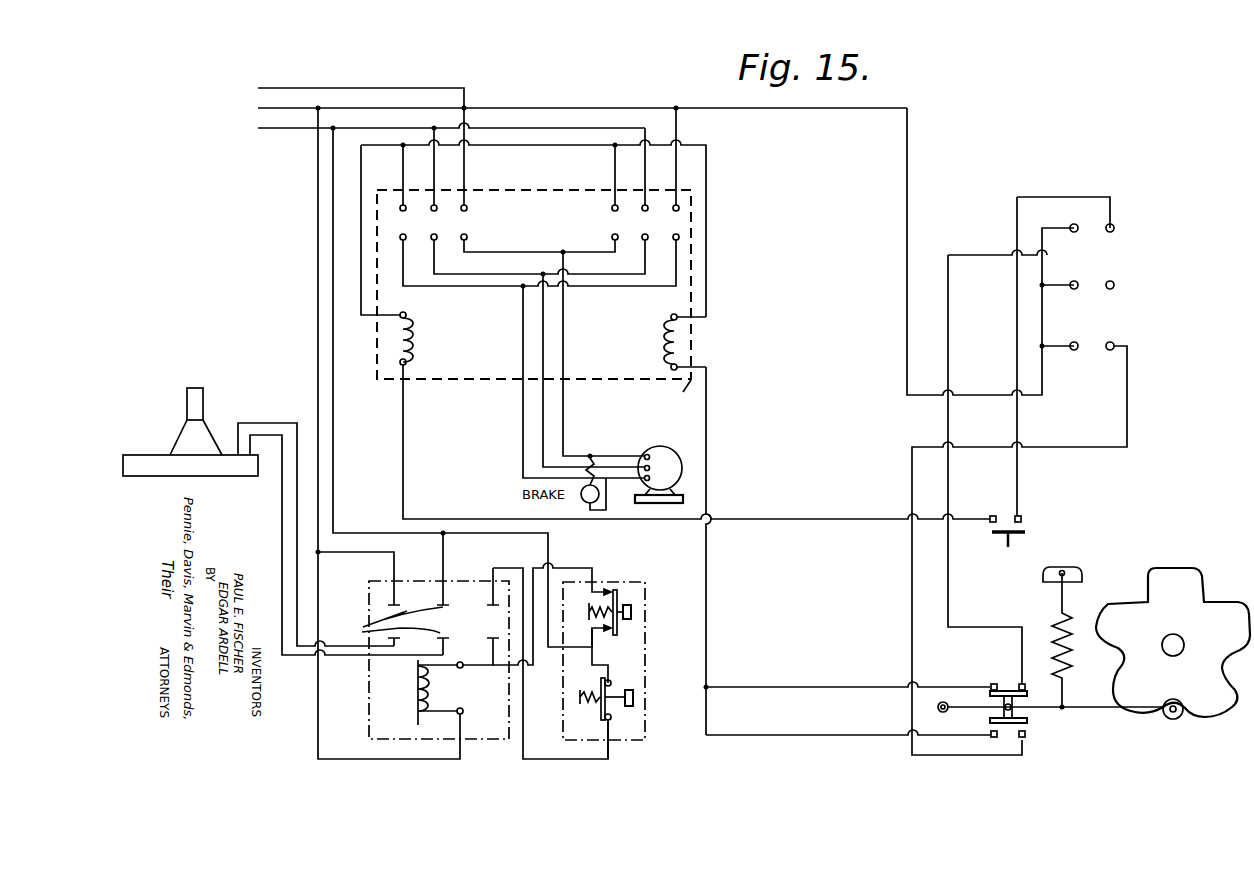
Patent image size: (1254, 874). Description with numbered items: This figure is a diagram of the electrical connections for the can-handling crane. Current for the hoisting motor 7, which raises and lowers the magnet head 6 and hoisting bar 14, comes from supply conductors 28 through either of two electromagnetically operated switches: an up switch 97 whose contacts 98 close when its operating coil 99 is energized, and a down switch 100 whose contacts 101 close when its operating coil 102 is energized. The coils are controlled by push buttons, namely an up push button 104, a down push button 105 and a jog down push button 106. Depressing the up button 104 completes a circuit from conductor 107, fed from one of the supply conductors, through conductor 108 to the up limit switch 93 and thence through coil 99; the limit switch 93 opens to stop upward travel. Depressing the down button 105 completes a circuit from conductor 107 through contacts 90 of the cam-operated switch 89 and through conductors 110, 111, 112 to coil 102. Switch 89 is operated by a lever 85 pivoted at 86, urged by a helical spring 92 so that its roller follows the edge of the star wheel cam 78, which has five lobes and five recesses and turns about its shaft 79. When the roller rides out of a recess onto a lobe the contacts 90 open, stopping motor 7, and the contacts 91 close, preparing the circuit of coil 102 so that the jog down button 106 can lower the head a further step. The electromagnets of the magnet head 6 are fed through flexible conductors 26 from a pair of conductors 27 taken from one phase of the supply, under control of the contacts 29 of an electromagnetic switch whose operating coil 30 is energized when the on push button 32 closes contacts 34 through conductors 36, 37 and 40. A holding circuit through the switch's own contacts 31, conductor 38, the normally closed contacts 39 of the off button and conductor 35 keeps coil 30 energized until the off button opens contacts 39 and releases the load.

The magnet head 6 is at (152, 457).
The hoisting motor 7 is at (678, 480).
The hoisting bar 14 is at (197, 403).
The flexible conductors 26 is at (297, 509).
The conductors 27 is at (333, 183).
The supply conductors 28 is at (285, 128).
The contacts 29 is at (391, 594).
The operating coil 30 is at (413, 688).
The contacts 31 is at (492, 630).
The on push button 32 is at (635, 605).
The contacts 34 is at (605, 585).
The conductor 35 is at (550, 546).
The conductor 36 is at (577, 568).
The conductor 37 is at (370, 553).
The conductor 38 is at (522, 573).
The contacts 39 is at (603, 708).
The conductor 40 is at (599, 658).
The star wheel cam 78 is at (1160, 590).
The cam shaft 79 is at (1162, 645).
The lever 85 is at (1113, 709).
The pivot 86 is at (945, 700).
The switch 89 is at (1036, 712).
The contacts 90 is at (1019, 684).
The contacts 91 is at (997, 742).
The helical spring 92 is at (1055, 625).
The up limit switch 93 is at (1007, 514).
The up switch 97 is at (383, 227).
The contacts 98 is at (436, 212).
The operating coil 99 is at (418, 320).
The down switch 100 is at (700, 221).
The contacts 101 is at (612, 211).
The operating coil 102 is at (680, 356).
The up push button 104 is at (1098, 225).
The down push button 105 is at (1100, 282).
The jog down push button 106 is at (1092, 345).
The conductor 107 is at (909, 173).
The conductor 108 is at (1018, 315).
The conductor 110 is at (960, 255).
The conductor 111 is at (768, 686).
The conductor 112 is at (758, 735).